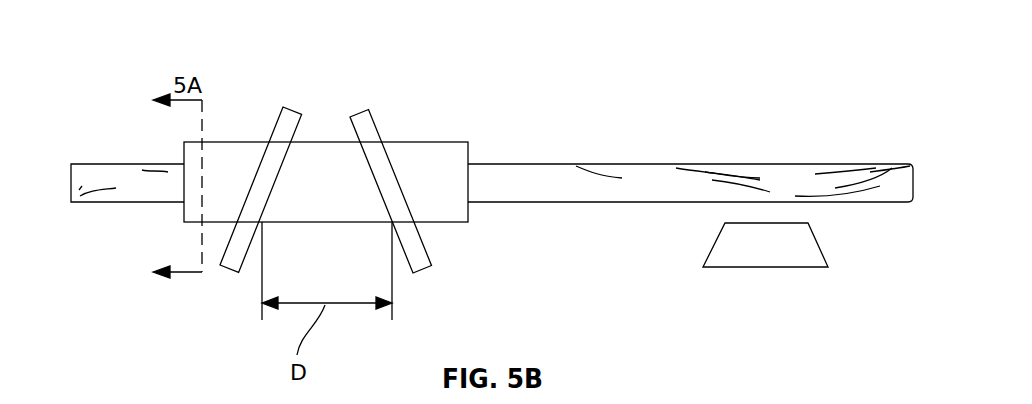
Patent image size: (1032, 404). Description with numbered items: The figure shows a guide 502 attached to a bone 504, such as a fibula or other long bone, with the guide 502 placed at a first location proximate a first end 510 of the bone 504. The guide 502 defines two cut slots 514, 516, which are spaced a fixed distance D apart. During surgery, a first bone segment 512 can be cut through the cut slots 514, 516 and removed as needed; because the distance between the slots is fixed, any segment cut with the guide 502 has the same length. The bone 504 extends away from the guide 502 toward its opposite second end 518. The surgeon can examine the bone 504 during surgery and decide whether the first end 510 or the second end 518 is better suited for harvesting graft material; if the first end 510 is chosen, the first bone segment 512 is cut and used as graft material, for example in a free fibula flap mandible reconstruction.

The guide 502 is at (455, 155).
The bone 504 is at (536, 173).
The first end 510 is at (79, 194).
The first bone segment 512 is at (747, 253).
The cut slot 514 is at (287, 108).
The cut slot 516 is at (360, 110).
The second end 518 is at (870, 170).